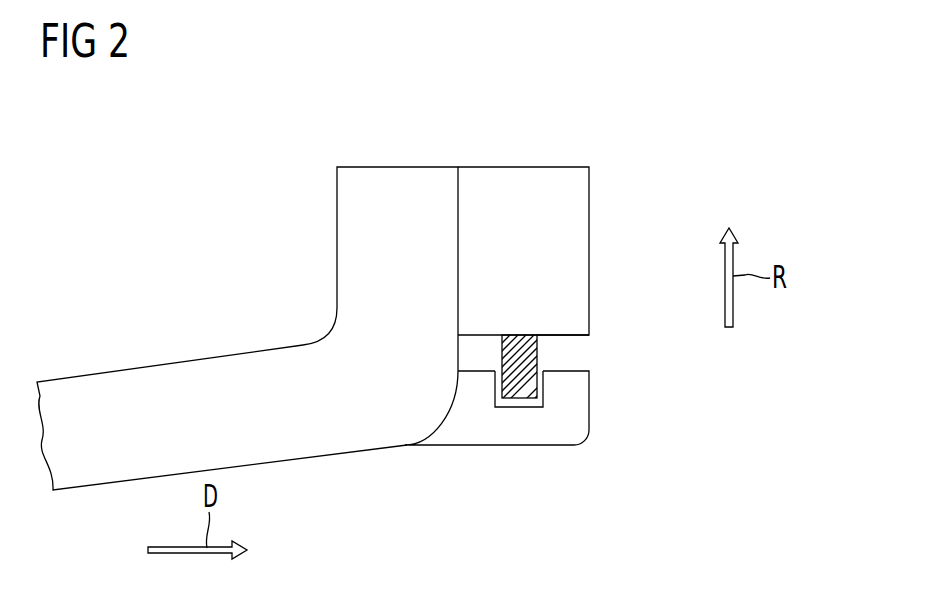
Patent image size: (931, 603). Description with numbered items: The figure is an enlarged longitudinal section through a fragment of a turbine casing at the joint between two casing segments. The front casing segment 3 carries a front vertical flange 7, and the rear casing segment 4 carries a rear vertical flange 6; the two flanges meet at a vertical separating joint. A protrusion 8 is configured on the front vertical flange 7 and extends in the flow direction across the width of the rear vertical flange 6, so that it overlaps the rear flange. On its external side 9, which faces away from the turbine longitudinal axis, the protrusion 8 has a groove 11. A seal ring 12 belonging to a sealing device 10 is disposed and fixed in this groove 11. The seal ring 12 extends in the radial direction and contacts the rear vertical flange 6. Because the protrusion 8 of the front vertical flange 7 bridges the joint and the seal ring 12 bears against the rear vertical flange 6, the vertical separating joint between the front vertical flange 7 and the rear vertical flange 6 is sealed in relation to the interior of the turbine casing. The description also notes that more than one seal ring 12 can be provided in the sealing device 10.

The front casing segment 3 is at (135, 302).
The rear casing segment 4 is at (572, 112).
The rear vertical flange 6 is at (531, 167).
The front vertical flange 7 is at (397, 167).
The protrusion 8 is at (493, 450).
The external side 9 is at (482, 368).
The sealing device 10 is at (548, 348).
The groove 11 is at (542, 392).
The seal ring 12 is at (528, 360).